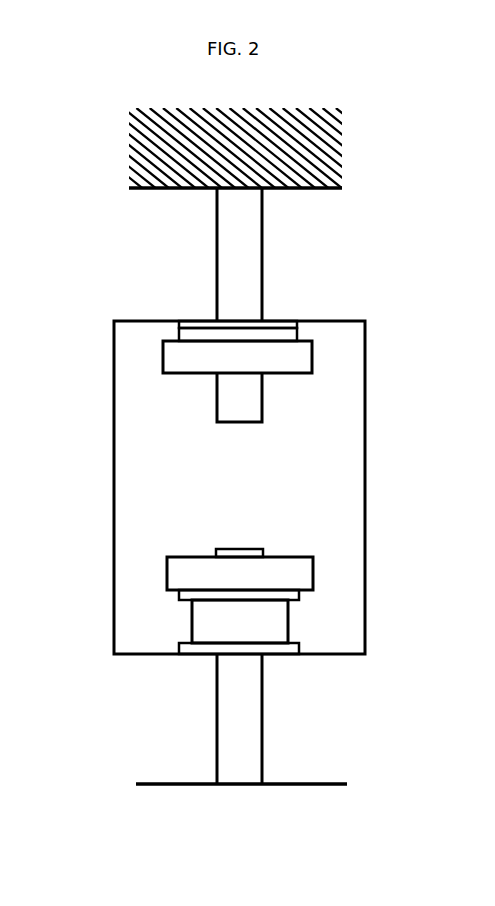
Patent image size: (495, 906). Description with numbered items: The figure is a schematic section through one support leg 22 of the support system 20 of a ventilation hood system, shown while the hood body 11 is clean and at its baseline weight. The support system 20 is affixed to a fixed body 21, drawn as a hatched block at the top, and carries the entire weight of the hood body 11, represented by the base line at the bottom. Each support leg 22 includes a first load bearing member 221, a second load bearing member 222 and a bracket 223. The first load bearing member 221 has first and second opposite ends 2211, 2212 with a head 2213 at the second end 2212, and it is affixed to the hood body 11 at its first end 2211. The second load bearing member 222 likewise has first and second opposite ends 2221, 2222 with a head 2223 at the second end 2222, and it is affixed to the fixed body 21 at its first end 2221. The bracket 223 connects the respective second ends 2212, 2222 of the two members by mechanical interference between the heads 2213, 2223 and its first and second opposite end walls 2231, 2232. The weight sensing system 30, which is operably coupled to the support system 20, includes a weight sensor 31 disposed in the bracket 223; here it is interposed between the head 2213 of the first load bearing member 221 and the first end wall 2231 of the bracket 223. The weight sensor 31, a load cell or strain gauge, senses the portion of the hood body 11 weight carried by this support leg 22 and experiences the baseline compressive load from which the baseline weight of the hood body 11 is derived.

The hood body 11 is at (150, 784).
The support system 20 is at (272, 267).
The fixed body 21 is at (140, 190).
The support leg 22 is at (249, 482).
The first load bearing member 221 is at (233, 679).
The first end 2211 is at (240, 775).
The second end 2212 is at (228, 548).
The head 2213 is at (268, 577).
The second load bearing member 222 is at (245, 305).
The first end 2221 is at (233, 201).
The second end 2222 is at (262, 422).
The head 2223 is at (188, 358).
The bracket 223 is at (365, 488).
The first end wall 2231 is at (333, 654).
The second end wall 2232 is at (330, 321).
The weight sensing system 30 is at (273, 586).
The weight sensor 31 is at (222, 623).